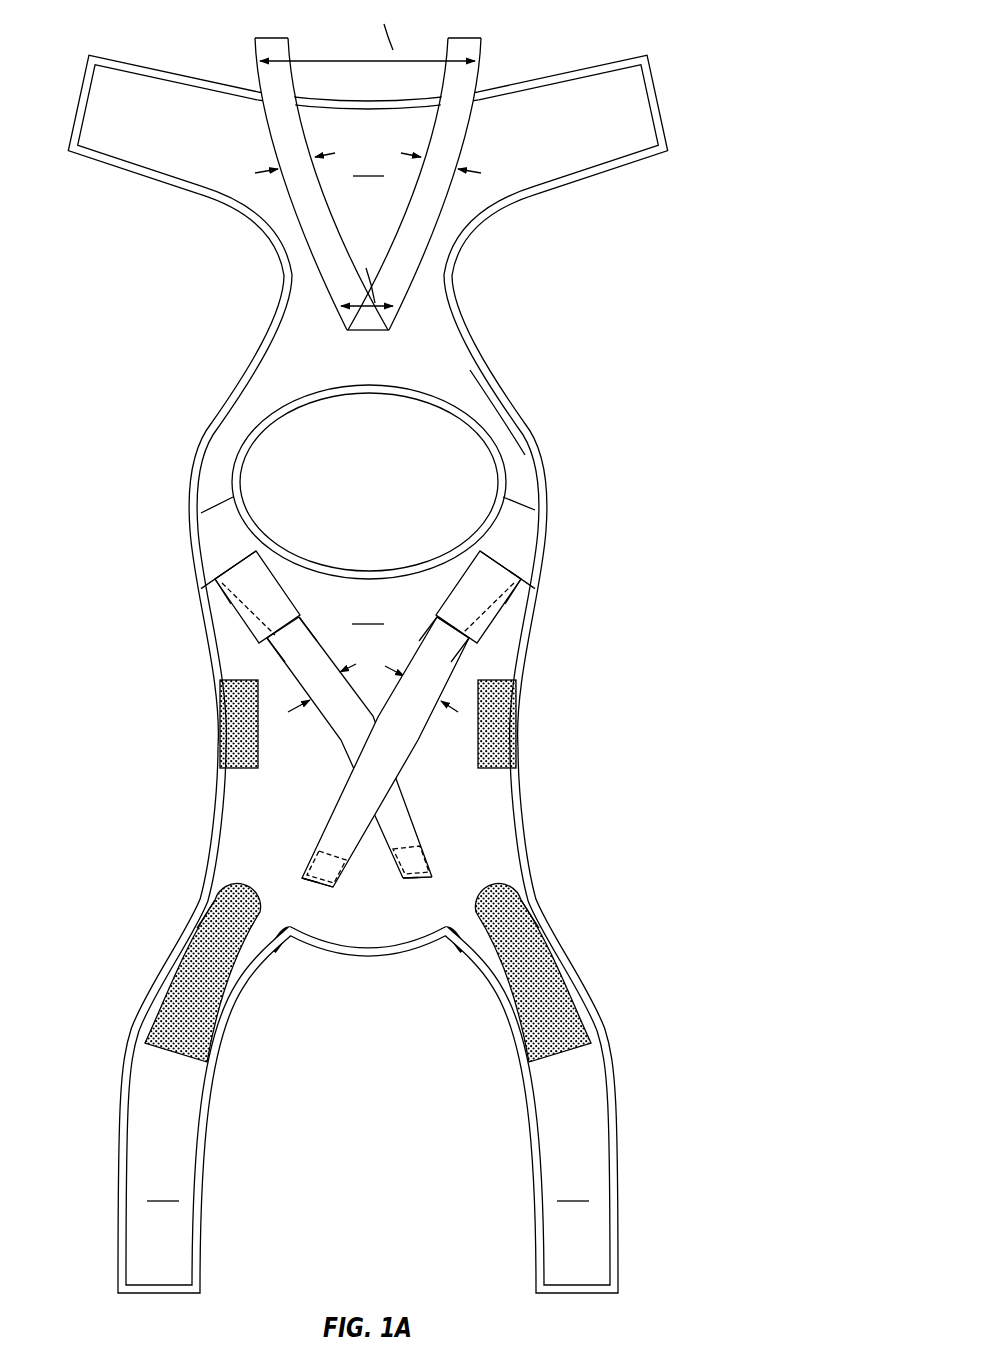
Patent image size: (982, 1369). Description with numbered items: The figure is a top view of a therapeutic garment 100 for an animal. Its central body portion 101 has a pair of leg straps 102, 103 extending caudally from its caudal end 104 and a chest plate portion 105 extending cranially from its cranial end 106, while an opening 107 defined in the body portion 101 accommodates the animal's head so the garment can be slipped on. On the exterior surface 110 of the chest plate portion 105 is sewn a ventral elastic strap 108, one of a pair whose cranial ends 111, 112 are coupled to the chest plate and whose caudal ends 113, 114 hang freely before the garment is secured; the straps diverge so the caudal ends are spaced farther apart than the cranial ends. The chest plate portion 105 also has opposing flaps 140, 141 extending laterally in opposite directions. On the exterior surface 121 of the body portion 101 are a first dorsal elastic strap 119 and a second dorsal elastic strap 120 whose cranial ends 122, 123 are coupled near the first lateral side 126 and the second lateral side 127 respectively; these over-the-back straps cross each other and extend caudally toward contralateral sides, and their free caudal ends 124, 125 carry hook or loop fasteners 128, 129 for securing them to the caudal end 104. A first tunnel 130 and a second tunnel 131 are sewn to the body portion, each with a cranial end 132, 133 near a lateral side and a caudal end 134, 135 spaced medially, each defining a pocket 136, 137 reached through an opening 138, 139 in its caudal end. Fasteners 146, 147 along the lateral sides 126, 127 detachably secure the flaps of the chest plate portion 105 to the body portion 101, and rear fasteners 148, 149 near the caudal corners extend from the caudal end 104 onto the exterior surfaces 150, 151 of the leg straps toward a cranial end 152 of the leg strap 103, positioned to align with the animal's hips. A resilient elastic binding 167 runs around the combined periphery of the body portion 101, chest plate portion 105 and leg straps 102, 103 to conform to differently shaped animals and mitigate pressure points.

The therapeutic garment 100 is at (788, 148).
The body portion 101 is at (367, 700).
The leg strap 102 is at (160, 1123).
The leg strap 103 is at (576, 1123).
The caudal end 104 is at (368, 952).
The chest plate portion 105 is at (365, 223).
The cranial end 106 is at (362, 593).
The opening 107 is at (367, 488).
The ventral elastic strap 108 is at (282, 122).
The exterior surface 110 is at (368, 137).
The cranial end 111 is at (345, 320).
The cranial end 112 is at (383, 320).
The caudal end 113 is at (273, 46).
The caudal end 114 is at (463, 46).
The first dorsal elastic strap 119 is at (337, 717).
The second dorsal elastic strap 120 is at (395, 717).
The exterior surface 121 is at (368, 611).
The cranial end 122 is at (245, 585).
The cranial end 123 is at (488, 588).
The caudal end 124 is at (410, 878).
The caudal end 125 is at (322, 882).
The first lateral side 126 is at (213, 650).
The second lateral side 127 is at (523, 650).
The fastener 128 is at (413, 853).
The fastener 129 is at (323, 853).
The first tunnel 130 is at (242, 615).
The second tunnel 131 is at (495, 620).
The cranial end 132 is at (233, 568).
The cranial end 133 is at (503, 568).
The caudal end 134 is at (284, 628).
The caudal end 135 is at (452, 628).
The pocket 136 is at (270, 643).
The pocket 137 is at (466, 643).
The opening 138 is at (277, 640).
The opening 139 is at (459, 640).
The first flap 140 is at (125, 115).
The second flap 141 is at (611, 115).
The fastener 146 is at (237, 718).
The fastener 147 is at (499, 718).
The rear fastener 148 is at (198, 975).
The rear fastener 149 is at (538, 975).
The exterior surface 150 is at (163, 1188).
The exterior surface 151 is at (155, 916).
The cranial end 152 is at (548, 930).
The binding 167 is at (473, 356).